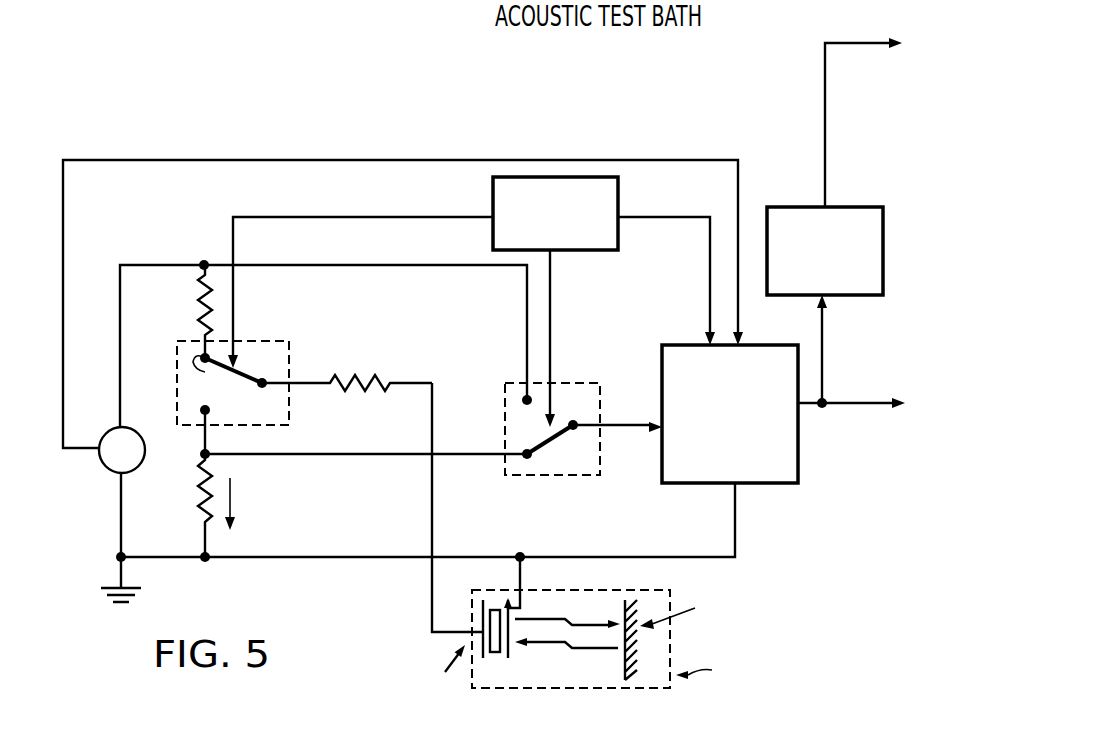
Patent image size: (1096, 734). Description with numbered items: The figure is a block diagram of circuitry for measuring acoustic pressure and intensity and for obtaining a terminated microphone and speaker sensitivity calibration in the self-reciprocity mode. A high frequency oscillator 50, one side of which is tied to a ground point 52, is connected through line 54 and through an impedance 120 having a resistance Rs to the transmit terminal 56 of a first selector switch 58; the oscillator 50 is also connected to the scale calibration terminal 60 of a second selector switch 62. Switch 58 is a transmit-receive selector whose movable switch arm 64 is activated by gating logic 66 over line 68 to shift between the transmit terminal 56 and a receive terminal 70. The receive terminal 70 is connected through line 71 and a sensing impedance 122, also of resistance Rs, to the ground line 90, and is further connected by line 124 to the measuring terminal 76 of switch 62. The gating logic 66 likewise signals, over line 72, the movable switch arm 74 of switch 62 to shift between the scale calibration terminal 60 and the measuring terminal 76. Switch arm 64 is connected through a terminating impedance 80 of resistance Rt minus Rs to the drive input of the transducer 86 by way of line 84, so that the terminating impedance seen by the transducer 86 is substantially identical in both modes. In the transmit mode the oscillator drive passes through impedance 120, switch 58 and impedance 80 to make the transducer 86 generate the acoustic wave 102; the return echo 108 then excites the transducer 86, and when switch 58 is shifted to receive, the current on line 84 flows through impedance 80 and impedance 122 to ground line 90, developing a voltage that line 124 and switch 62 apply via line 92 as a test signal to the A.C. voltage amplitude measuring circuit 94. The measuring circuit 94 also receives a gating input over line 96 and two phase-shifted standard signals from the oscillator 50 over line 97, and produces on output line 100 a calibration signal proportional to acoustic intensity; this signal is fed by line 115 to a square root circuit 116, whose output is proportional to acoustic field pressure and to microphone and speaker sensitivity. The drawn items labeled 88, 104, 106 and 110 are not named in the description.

The high frequency oscillator 50 is at (103, 432).
The ground point 52 is at (130, 594).
The line 54 is at (118, 332).
The transmit terminal 56 is at (199, 376).
The first selector switch 58 is at (212, 358).
The scale calibration terminal 60 is at (520, 400).
The second selector switch 62 is at (546, 426).
The movable switch arm 64 is at (240, 380).
The gating logic 66 is at (618, 252).
The line 68 is at (335, 217).
The receive terminal 70 is at (212, 410).
The line 71 is at (210, 438).
The line 72 is at (552, 337).
The movable switch arm 74 is at (545, 432).
The measuring terminal 76 is at (536, 457).
The impedance 80 is at (365, 380).
The line 84 is at (433, 490).
The transducer 86 is at (463, 642).
The transducer return lead 88 is at (522, 572).
The ground line 90 is at (253, 560).
The line 92 is at (615, 428).
The A.C. voltage amplitude measuring circuit 94 is at (758, 345).
The line 96 is at (655, 217).
The line 97 is at (65, 188).
The output line 100 is at (858, 403).
The acoustic wave 102 is at (555, 614).
The acoustic test bath 104 is at (663, 635).
The reflector 106 is at (625, 602).
The return echo 108 is at (585, 652).
The acoustic pressure / sensitivity signals output 110 is at (852, 43).
The line 115 is at (826, 350).
The square root circuit 116 is at (883, 268).
The impedance 120 is at (197, 286).
The sensing impedance 122 is at (195, 528).
The line 124 is at (305, 458).